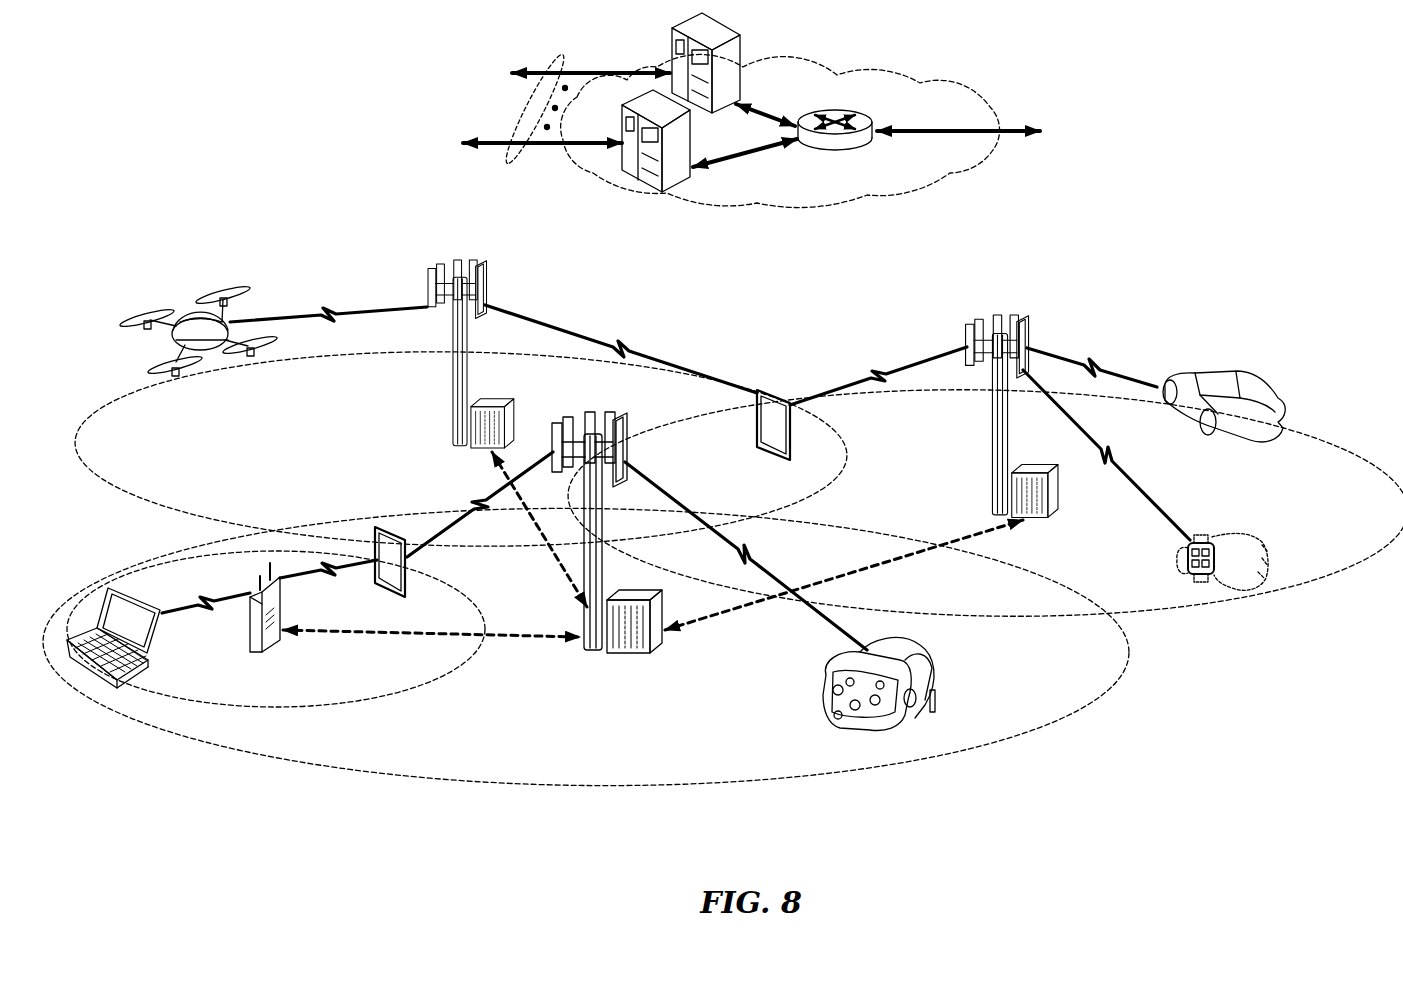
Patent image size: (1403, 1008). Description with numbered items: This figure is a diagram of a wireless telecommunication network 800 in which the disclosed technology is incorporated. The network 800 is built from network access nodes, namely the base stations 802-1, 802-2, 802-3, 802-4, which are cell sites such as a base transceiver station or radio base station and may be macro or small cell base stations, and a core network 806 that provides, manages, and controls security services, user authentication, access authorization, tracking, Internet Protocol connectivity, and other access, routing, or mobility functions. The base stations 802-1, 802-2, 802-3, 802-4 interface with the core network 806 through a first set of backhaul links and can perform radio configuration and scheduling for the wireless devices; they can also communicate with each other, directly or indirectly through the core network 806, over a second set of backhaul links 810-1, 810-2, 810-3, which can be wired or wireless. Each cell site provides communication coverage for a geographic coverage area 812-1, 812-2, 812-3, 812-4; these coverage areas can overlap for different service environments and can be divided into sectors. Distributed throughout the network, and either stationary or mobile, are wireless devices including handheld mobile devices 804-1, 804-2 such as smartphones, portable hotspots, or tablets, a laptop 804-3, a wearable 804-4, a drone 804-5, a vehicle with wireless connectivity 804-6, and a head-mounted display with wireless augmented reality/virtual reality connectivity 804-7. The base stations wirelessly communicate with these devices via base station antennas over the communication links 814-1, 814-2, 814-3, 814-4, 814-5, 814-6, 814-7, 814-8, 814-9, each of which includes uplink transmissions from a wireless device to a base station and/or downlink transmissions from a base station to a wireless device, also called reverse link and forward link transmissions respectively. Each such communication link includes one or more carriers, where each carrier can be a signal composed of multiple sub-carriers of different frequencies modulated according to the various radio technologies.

The wireless telecommunication network 800 is at (1298, 120).
The core network 806 is at (867, 202).
The base station 802-1 is at (595, 652).
The base station 802-2 is at (450, 393).
The base station 802-3 is at (993, 430).
The base station 802-4 is at (248, 638).
The handheld mobile device 804-1 is at (408, 577).
The handheld mobile device 804-2 is at (760, 432).
The laptop 804-3 is at (93, 680).
The wearable 804-4 is at (1203, 540).
The drone 804-5 is at (208, 358).
The vehicle with wireless connectivity 804-6 is at (1243, 383).
The head-mounted display with wireless AR/VR connectivity 804-7 is at (943, 665).
The backhaul link 810-1 is at (322, 635).
The backhaul link 810-2 is at (912, 553).
The backhaul link 810-3 is at (553, 553).
The geographic coverage area 812-1 is at (517, 790).
The geographic coverage area 812-2 is at (390, 693).
The geographic coverage area 812-3 is at (135, 500).
The geographic coverage area 812-4 is at (1297, 427).
The communication link 814-1 is at (763, 553).
The communication link 814-2 is at (473, 495).
The communication link 814-3 is at (172, 608).
The communication link 814-4 is at (320, 575).
The communication link 814-5 is at (330, 310).
The communication link 814-6 is at (630, 345).
The communication link 814-7 is at (880, 367).
The communication link 814-8 is at (1127, 463).
The communication link 814-9 is at (1095, 360).